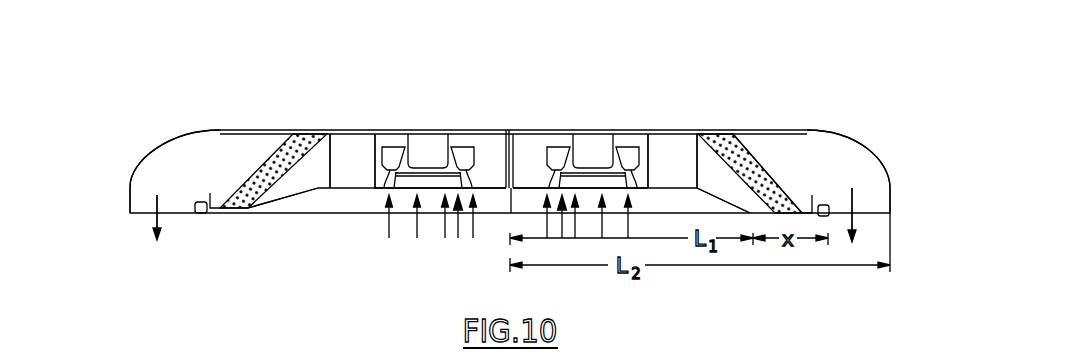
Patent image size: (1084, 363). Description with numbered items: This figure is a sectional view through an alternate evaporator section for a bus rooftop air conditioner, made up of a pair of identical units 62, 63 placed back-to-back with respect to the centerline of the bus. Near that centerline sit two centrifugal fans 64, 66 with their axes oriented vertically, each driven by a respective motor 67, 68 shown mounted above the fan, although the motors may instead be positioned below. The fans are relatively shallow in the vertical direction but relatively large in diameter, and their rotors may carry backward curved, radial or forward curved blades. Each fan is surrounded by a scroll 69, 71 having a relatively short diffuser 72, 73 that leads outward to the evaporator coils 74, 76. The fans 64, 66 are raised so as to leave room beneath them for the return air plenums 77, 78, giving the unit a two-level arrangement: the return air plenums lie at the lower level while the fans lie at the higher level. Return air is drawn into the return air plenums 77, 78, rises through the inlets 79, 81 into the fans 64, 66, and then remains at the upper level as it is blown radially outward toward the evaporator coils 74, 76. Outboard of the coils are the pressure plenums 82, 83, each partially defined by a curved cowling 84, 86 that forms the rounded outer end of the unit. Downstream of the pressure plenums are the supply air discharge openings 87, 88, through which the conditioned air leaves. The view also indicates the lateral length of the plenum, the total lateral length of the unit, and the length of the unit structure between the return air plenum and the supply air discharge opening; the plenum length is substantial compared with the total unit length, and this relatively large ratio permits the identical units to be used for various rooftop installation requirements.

The unit 62 is at (752, 130).
The unit 63 is at (270, 130).
The centrifugal fan 64 is at (630, 157).
The centrifugal fan 66 is at (465, 153).
The motor 67 is at (602, 145).
The motor 68 is at (437, 145).
The scroll 69 is at (530, 152).
The scroll 71 is at (493, 153).
The diffuser 72 is at (673, 148).
The diffuser 73 is at (347, 152).
The evaporator coil 74 is at (765, 170).
The evaporator coil 76 is at (250, 213).
The return air plenum 77 is at (660, 203).
The return air plenum 78 is at (357, 203).
The inlet 79 is at (562, 238).
The inlet 81 is at (458, 238).
The pressure plenum 82 is at (823, 155).
The pressure plenum 83 is at (221, 165).
The curved cowling 84 is at (872, 165).
The curved cowling 86 is at (158, 152).
The supply air discharge opening 87 is at (872, 218).
The supply air discharge opening 88 is at (141, 213).